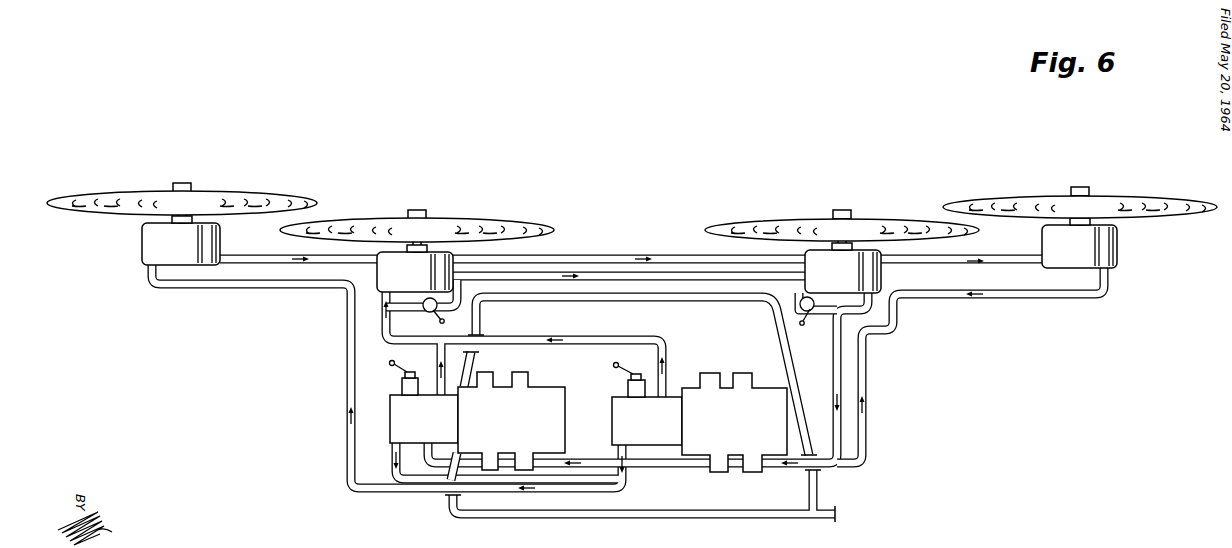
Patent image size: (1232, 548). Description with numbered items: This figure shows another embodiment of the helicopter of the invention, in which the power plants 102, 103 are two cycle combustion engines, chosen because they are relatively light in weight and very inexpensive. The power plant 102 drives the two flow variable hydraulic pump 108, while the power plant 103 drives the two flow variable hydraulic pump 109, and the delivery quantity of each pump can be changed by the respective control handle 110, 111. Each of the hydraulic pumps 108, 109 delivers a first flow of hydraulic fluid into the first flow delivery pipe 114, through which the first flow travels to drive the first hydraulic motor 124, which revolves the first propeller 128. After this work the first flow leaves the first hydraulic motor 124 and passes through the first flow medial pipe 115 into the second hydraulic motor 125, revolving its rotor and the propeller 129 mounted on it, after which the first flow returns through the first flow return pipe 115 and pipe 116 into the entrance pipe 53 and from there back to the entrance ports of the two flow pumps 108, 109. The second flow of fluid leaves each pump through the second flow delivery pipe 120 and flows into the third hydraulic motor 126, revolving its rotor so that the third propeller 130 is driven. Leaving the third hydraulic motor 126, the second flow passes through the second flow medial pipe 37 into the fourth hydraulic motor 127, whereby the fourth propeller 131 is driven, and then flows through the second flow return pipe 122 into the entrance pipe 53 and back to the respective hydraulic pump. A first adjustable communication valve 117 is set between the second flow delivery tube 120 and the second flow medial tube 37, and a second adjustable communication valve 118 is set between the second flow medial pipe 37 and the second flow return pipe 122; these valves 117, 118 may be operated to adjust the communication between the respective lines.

The second flow medial pipe 37 is at (612, 274).
The entrance pipe 53 is at (683, 467).
The power plant 102 is at (490, 423).
The power plant 103 is at (712, 423).
The two flow variable hydraulic pump 108 is at (402, 417).
The two flow variable hydraulic pump 109 is at (628, 423).
The control handle 110 is at (390, 362).
The control handle 111 is at (612, 364).
The first flow delivery pipe 114 is at (270, 288).
The first flow medial pipe 115 is at (237, 258).
The return conduit 116 is at (1030, 297).
The first adjustable communication valve 117 is at (437, 318).
The second adjustable communication valve 118 is at (803, 327).
The second flow delivery pipe 120 is at (540, 328).
The second flow return pipe 122 is at (870, 308).
The first hydraulic motor 124 is at (163, 242).
The second hydraulic motor 125 is at (1115, 248).
The third hydraulic motor 126 is at (427, 268).
The fourth hydraulic motor 127 is at (857, 268).
The first propeller 128 is at (106, 192).
The propeller 129 is at (1007, 204).
The third propeller 130 is at (352, 222).
The fourth propeller 131 is at (781, 222).